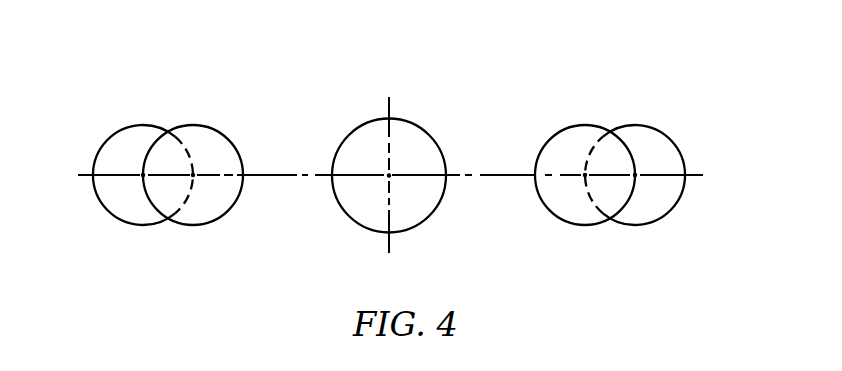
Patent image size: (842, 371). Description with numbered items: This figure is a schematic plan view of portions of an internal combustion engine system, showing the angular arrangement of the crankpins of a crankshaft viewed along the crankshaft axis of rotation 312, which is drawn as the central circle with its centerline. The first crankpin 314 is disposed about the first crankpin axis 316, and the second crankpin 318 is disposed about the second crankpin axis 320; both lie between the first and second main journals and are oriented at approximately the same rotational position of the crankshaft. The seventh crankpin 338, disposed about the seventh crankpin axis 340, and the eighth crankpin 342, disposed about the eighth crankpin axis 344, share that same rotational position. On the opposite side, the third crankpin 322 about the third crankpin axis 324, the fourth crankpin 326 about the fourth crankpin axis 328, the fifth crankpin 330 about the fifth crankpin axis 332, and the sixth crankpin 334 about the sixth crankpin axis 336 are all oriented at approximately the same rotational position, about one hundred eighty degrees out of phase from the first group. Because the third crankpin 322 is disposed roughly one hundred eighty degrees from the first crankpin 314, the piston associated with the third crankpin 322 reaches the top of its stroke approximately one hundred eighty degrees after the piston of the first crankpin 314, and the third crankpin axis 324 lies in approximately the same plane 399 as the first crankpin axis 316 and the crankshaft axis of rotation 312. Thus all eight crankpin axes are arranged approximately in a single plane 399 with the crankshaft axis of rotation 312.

The crankshaft axis of rotation 312 is at (390, 175).
The first crankpin 314 is at (197, 142).
The first crankpin axis 316 is at (197, 171).
The second crankpin 318 is at (115, 152).
The second crankpin axis 320 is at (140, 171).
The third crankpin 322 is at (583, 142).
The third crankpin axis 324 is at (581, 171).
The fourth crankpin 326 is at (665, 153).
The fourth crankpin axis 328 is at (639, 171).
The fifth crankpin 330 is at (585, 208).
The fifth crankpin axis 332 is at (581, 179).
The sixth crankpin 334 is at (675, 188).
The sixth crankpin axis 336 is at (639, 179).
The seventh crankpin 338 is at (195, 210).
The seventh crankpin axis 340 is at (197, 179).
The eighth crankpin 342 is at (107, 186).
The eighth crankpin axis 344 is at (139, 179).
The plane 399 is at (285, 175).